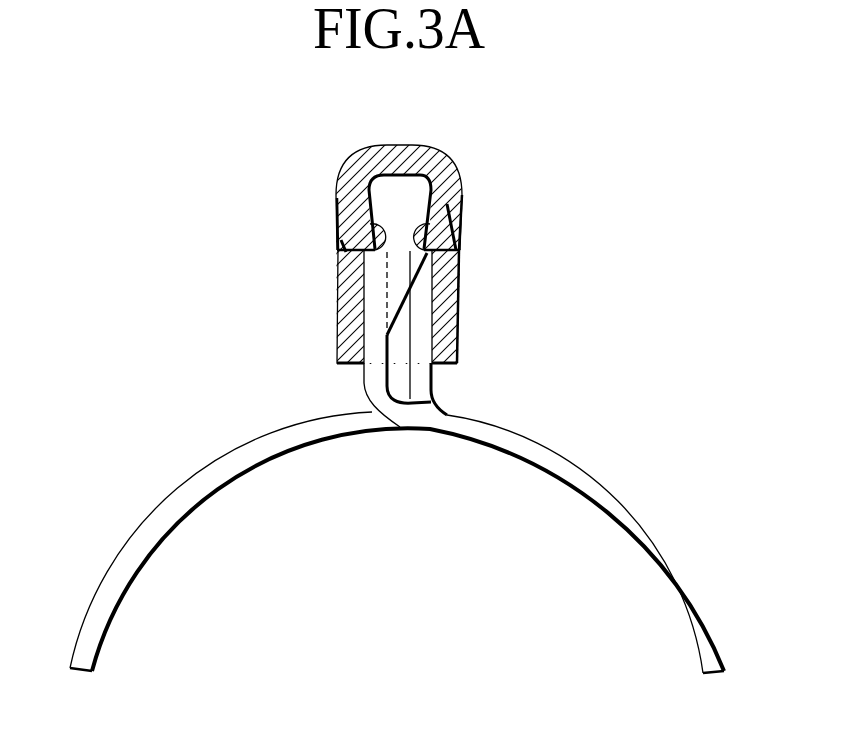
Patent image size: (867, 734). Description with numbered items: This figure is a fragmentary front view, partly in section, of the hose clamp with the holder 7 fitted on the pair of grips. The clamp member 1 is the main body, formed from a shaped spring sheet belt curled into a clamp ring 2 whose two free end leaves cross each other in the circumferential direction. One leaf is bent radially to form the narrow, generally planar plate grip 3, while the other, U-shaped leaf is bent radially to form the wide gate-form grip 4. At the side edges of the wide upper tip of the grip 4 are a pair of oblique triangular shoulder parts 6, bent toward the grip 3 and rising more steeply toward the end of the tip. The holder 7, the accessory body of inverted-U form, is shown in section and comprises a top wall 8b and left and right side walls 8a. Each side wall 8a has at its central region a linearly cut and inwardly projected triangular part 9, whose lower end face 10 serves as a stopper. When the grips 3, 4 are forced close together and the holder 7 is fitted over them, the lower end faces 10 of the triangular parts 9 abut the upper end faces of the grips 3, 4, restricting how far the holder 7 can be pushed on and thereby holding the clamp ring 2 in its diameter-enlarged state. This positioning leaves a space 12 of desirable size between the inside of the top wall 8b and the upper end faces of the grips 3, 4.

The clamp member 1 is at (410, 527).
The clamp ring 2 is at (682, 583).
The plate grip 3 is at (430, 347).
The grip 4 is at (372, 287).
The shoulder parts 6 is at (410, 275).
The holder 7 is at (395, 224).
The side walls 8a is at (338, 333).
The top wall 8b is at (393, 145).
The triangular part 9 is at (340, 250).
The lower end face 10 is at (345, 221).
The space 12 is at (406, 201).